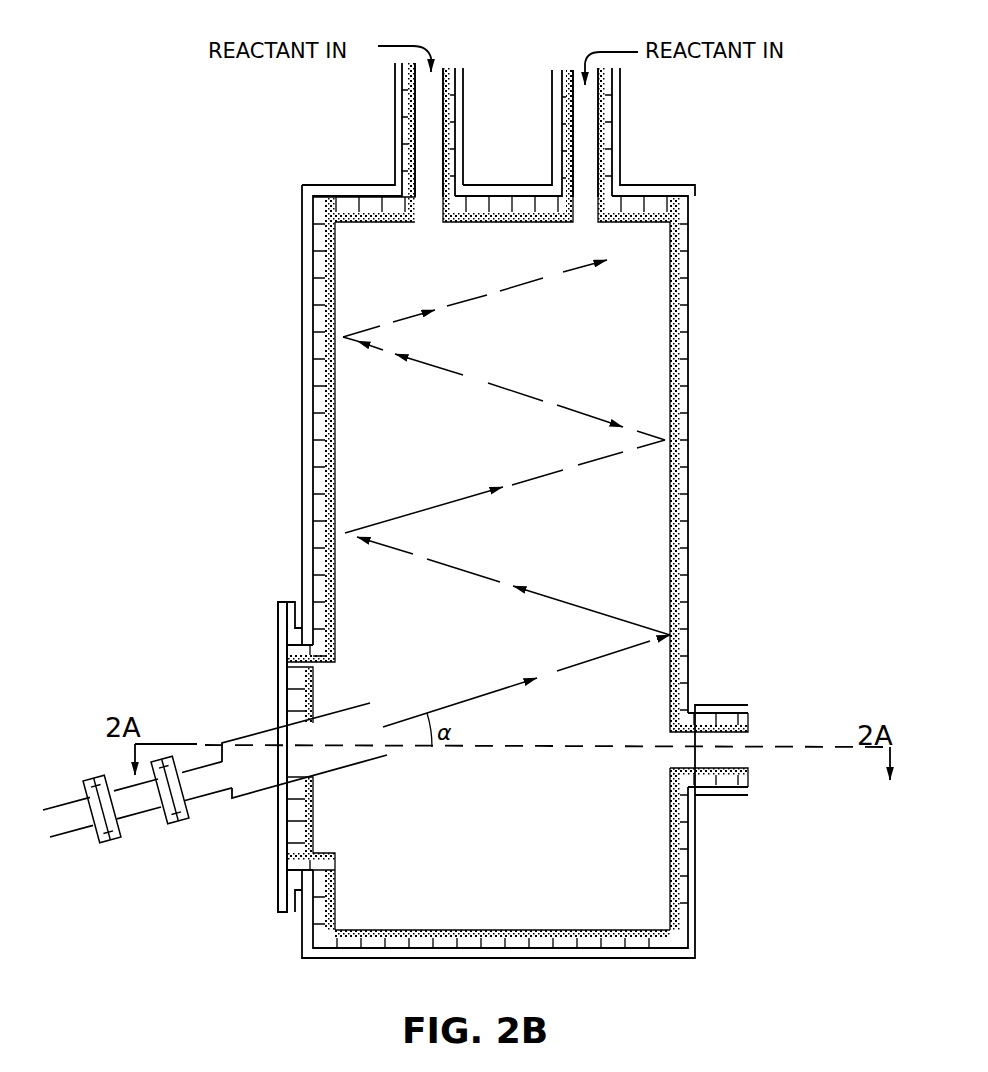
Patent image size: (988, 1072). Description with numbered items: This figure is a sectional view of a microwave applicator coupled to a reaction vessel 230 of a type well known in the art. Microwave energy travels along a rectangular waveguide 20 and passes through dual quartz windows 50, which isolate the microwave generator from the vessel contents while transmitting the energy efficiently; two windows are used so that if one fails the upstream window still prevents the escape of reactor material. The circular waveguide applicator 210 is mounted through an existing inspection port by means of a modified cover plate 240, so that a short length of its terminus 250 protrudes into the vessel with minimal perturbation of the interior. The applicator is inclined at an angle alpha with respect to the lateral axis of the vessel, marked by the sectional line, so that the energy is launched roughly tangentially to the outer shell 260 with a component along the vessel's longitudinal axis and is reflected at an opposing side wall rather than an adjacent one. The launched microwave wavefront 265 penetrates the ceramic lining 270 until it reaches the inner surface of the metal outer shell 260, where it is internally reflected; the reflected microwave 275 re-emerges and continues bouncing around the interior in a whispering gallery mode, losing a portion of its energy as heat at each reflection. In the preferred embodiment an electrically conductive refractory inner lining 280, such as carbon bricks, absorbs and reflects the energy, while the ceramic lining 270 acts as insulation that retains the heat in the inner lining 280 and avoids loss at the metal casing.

The rectangular waveguide 20 is at (63, 802).
The quartz windows 50 is at (178, 820).
The circular waveguide applicator 210 is at (228, 800).
The reaction vessel 230 is at (258, 276).
The cover plate 240 is at (283, 642).
The terminus 250 is at (368, 705).
The outer shell 260 is at (692, 353).
The launched microwave wavefront 265 is at (577, 667).
The ceramic lining 270 is at (682, 500).
The reflected microwave 275 is at (570, 600).
The inner lining 280 is at (463, 928).